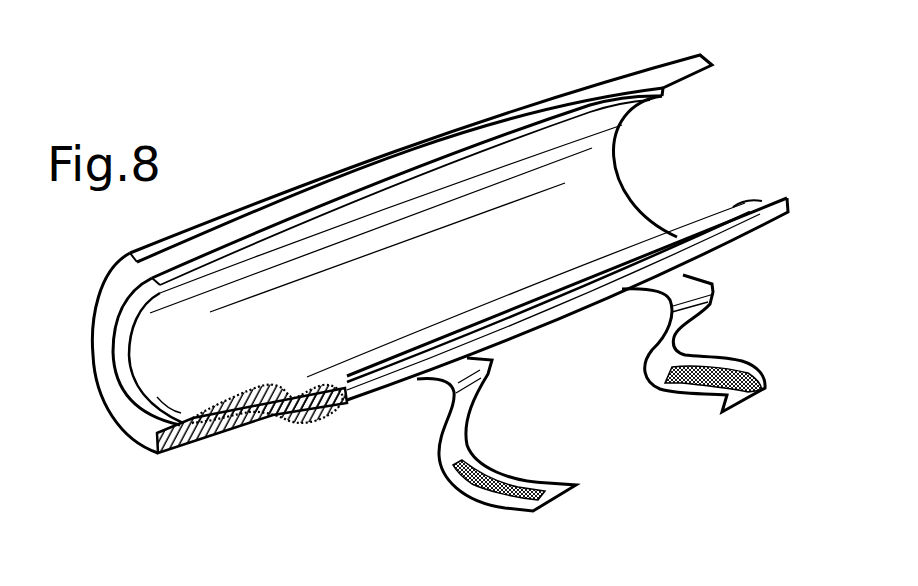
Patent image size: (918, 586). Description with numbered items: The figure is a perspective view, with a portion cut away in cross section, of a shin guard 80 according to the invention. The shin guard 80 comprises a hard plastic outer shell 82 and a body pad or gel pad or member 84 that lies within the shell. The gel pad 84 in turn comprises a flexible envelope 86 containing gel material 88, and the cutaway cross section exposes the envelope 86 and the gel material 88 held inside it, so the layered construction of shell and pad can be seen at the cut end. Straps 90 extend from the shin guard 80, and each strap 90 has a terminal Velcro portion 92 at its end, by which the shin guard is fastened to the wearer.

The shin guard 80 is at (434, 118).
The hard plastic outer shell 82 is at (602, 86).
The gel pad 84 is at (607, 192).
The flexible envelope 86 is at (240, 400).
The gel material 88 is at (273, 418).
The straps 90 is at (695, 285).
The terminal Velcro portions 92 is at (726, 372).